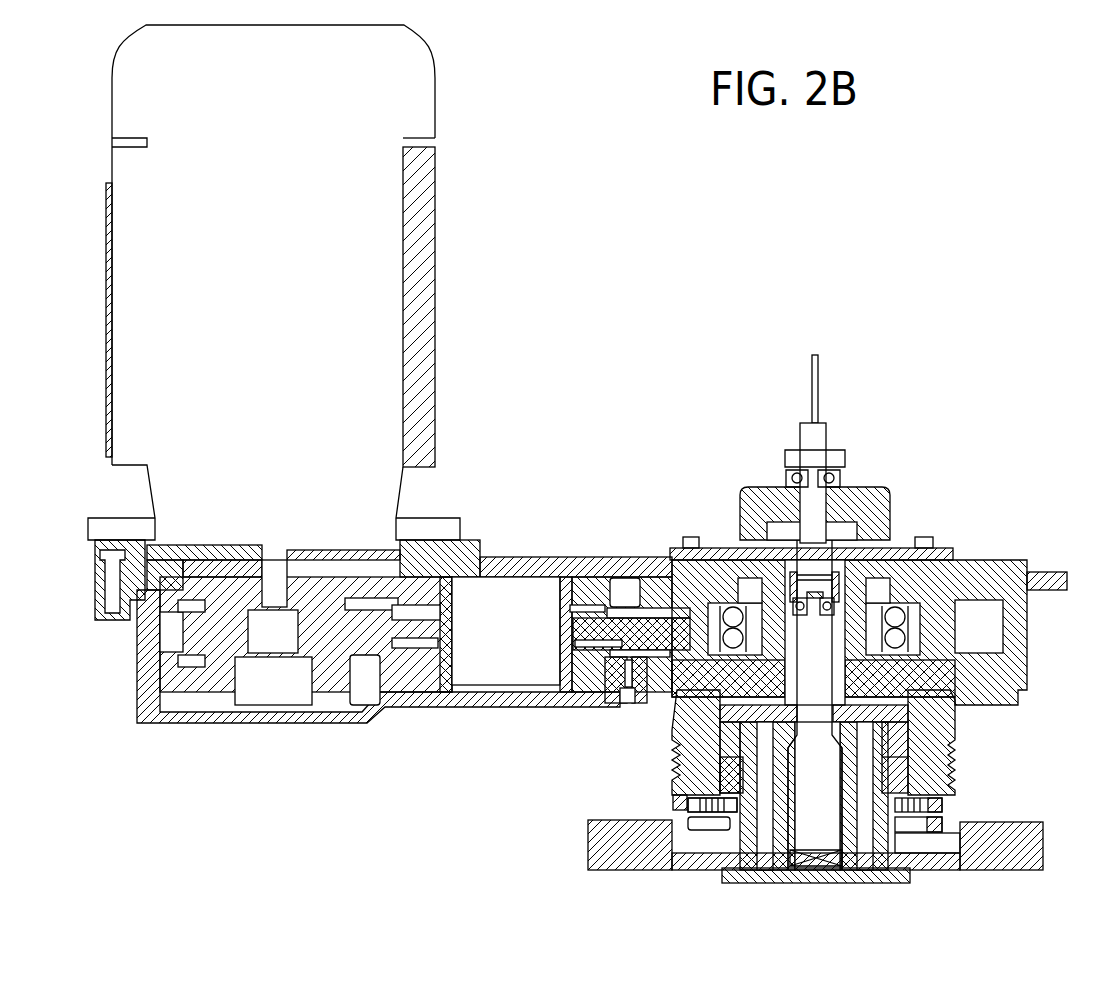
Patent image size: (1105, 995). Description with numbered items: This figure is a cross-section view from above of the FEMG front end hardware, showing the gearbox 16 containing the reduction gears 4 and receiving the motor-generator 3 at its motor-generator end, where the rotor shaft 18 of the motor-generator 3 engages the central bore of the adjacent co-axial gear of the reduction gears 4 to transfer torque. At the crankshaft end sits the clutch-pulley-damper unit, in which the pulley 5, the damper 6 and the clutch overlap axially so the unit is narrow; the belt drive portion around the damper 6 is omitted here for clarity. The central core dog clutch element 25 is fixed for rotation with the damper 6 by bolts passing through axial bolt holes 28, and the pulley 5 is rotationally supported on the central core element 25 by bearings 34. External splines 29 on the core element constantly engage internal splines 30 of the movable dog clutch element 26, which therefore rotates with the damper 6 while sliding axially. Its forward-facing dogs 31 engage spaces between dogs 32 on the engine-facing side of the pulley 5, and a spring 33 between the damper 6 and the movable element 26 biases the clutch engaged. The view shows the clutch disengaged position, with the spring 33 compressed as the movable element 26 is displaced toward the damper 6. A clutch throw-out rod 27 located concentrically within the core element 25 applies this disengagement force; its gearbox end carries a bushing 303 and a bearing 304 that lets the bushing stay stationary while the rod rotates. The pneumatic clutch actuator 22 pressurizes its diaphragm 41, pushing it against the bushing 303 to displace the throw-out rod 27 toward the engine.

The motor-generator 3 is at (436, 190).
The reduction gears 4 is at (680, 623).
The pulley 5 is at (683, 738).
The damper 6 is at (588, 845).
The gearbox 16 is at (160, 725).
The rotor shaft 18 is at (273, 576).
The clutch actuator 22 is at (858, 487).
The central core dog clutch element 25 is at (890, 850).
The movable dog clutch element 26 is at (943, 840).
The clutch throw-out rod 27 is at (813, 807).
The axial bolt holes 28 is at (765, 828).
The external splines 29 is at (737, 823).
The internal splines 30 is at (712, 805).
The forward-facing dogs 31 is at (933, 823).
The dogs 32 is at (937, 806).
The spring 33 is at (833, 870).
The bearings 34 is at (897, 772).
The clutch actuator diaphragm 41 is at (880, 545).
The bushing 303 is at (768, 530).
The bearing 304 is at (797, 602).